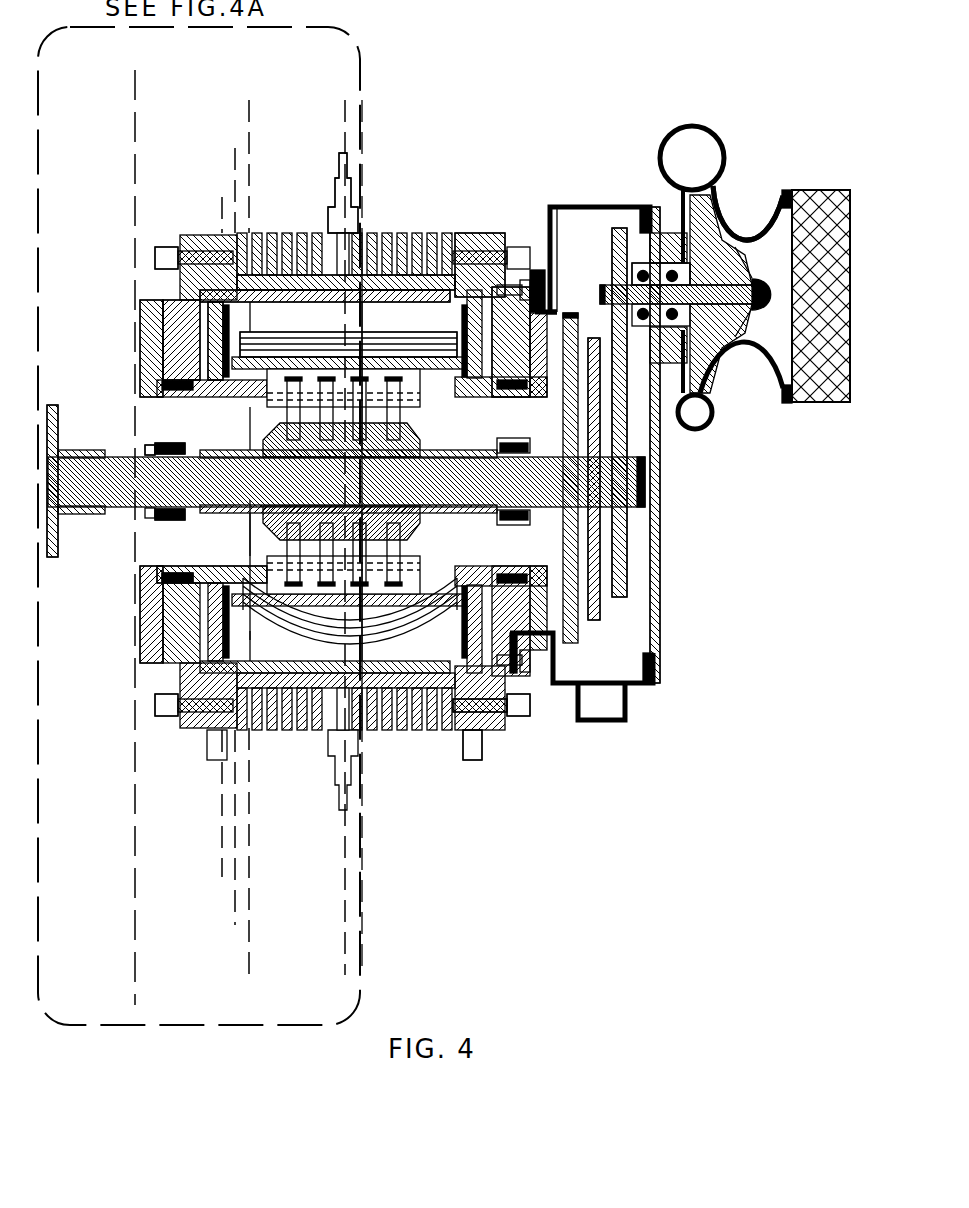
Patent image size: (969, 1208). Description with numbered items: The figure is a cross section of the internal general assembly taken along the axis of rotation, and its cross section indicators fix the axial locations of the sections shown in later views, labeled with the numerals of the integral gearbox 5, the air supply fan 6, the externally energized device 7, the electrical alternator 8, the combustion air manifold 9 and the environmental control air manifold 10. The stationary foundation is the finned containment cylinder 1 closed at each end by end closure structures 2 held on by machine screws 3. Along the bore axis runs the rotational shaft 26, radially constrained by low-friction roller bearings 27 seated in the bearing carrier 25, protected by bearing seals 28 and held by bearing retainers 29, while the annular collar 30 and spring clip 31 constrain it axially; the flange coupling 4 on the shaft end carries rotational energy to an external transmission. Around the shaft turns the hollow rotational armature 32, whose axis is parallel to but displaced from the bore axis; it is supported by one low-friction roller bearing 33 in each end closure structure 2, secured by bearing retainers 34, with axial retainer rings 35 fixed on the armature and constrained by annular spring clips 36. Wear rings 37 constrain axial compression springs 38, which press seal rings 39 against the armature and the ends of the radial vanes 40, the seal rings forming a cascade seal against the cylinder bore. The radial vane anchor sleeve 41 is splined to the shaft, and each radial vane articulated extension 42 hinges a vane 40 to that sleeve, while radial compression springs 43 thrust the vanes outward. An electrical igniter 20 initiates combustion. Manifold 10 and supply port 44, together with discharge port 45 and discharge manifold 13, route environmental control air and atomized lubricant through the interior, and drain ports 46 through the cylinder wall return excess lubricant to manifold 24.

The containment cylinder 1 is at (362, 232).
The end closure structures 2 is at (522, 250).
The machine screws 3 is at (178, 250).
The flange coupling 4 is at (107, 457).
The integral gearbox 5 is at (600, 207).
The air supply fan 6 is at (722, 226).
The externally energized device 7 is at (185, 925).
The electrical alternator 8 is at (172, 877).
The manifold 9 is at (162, 656).
The manifold 10 is at (185, 1005).
The manifold 13 is at (600, 723).
The electrical igniter 20 is at (350, 198).
The manifold 24 is at (477, 760).
The bearing carrier 25 is at (662, 478).
The rotational shaft 26 is at (150, 500).
The low-friction roller bearings 27 is at (627, 680).
The bearing seals 28 is at (640, 660).
The bearing retainers 29 is at (655, 580).
The annular collar 30 is at (168, 415).
The spring clip 31 is at (165, 560).
The rotational armature 32 is at (350, 685).
The low-friction roller bearing 33 is at (610, 700).
The bearing retainers 34 is at (640, 520).
The axial retainer rings 35 is at (520, 665).
The annular spring clips 36 is at (178, 600).
The wear rings 37 is at (515, 700).
The axial compression springs 38 is at (422, 690).
The seal rings 39 is at (490, 718).
The radial vanes 40 is at (398, 648).
The radial vane anchor sleeve 41 is at (585, 717).
The radial vane articulated extension 42 is at (588, 212).
The radial compression springs 43 is at (330, 700).
The supply port 44 is at (160, 385).
The discharge port 45 is at (625, 535).
The drain ports 46 is at (478, 732).